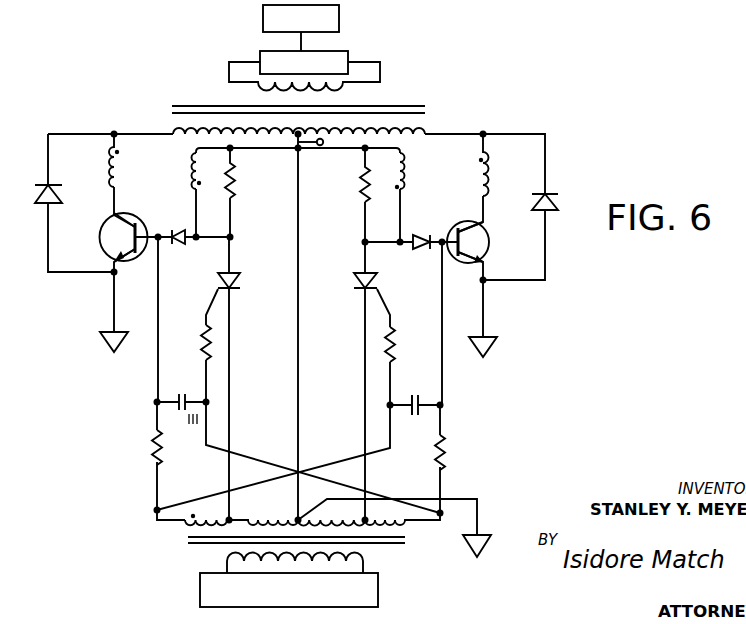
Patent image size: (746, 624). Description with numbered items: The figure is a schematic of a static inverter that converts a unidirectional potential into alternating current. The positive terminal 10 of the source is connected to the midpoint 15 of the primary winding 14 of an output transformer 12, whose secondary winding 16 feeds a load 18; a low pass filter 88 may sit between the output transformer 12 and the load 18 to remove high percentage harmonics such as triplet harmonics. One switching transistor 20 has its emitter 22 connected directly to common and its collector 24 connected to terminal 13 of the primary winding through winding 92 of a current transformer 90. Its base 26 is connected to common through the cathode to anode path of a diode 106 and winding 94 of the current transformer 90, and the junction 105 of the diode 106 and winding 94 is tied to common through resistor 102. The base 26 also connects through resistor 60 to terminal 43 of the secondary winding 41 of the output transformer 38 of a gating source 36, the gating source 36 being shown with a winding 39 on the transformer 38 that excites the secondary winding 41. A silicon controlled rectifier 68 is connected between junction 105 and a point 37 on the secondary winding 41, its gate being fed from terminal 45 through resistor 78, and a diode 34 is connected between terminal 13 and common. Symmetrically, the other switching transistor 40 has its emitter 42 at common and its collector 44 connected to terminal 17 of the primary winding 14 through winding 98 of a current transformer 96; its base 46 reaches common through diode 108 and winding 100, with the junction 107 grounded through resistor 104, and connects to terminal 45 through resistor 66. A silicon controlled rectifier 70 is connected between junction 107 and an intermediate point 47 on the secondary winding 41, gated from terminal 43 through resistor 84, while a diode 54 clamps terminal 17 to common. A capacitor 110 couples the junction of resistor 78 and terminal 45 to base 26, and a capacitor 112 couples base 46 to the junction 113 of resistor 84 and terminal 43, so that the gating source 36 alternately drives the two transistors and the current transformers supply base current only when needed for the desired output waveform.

The load 18 is at (339, 27).
The low pass filter 88 is at (348, 60).
The secondary winding 16 is at (343, 89).
The output transformer 12 is at (226, 103).
The terminal 13 is at (176, 127).
The primary winding 14 is at (198, 132).
The midpoint 15 is at (297, 135).
The terminal 17 is at (432, 126).
The positive terminal 10 is at (332, 143).
The winding 92 is at (108, 164).
The current transformer 90 is at (163, 174).
The winding 94 is at (210, 171).
The resistor 102 is at (234, 193).
The junction 105 is at (198, 237).
The diode 106 is at (180, 247).
The switching transistor 20 is at (100, 243).
The collector 24 is at (121, 216).
The base 26 is at (138, 232).
The emitter 22 is at (122, 256).
The diode 34 is at (44, 197).
The resistor 104 is at (360, 181).
The winding 100 is at (406, 189).
The junction 107 is at (398, 238).
The diode 108 is at (411, 256).
The current transformer 96 is at (464, 173).
The winding 98 is at (490, 189).
The diode 54 is at (533, 206).
The switching transistor 40 is at (489, 245).
The collector 44 is at (467, 212).
The base 46 is at (453, 229).
The emitter 42 is at (467, 258).
The silicon controlled rectifier 68 is at (240, 280).
The silicon controlled rectifier 70 is at (379, 283).
The resistor 78 is at (203, 337).
The resistor 84 is at (393, 353).
The capacitor 110 is at (191, 378).
The capacitor 112 is at (419, 410).
The junction 113 is at (393, 401).
The resistor 60 is at (160, 462).
The resistor 66 is at (448, 458).
The terminal 43 is at (184, 526).
The point 37 is at (233, 518).
The secondary winding 41 is at (262, 522).
The intermediate point 47 is at (360, 518).
The terminal 45 is at (411, 527).
The output transformer 38 is at (435, 575).
The gating winding 39 is at (372, 556).
The gating source 36 is at (378, 590).